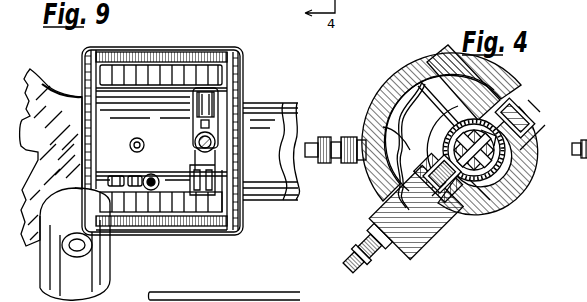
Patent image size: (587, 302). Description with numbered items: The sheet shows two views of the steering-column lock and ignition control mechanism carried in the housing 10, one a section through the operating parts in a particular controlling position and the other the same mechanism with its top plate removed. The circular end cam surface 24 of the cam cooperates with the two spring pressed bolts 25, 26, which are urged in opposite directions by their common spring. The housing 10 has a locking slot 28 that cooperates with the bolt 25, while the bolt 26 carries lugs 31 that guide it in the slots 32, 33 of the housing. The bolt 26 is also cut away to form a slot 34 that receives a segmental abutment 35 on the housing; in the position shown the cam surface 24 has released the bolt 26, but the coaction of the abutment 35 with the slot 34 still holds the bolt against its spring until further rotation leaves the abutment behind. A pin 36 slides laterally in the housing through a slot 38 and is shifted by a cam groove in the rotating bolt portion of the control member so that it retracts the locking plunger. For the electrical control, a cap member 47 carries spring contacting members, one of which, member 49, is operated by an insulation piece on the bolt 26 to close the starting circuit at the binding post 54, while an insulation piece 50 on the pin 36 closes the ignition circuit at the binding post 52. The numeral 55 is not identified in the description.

In FIG. 4, the housing member 10 is at (512, 203).
In FIG. 4, the circular end cam surface 24 is at (486, 132).
In FIG. 4, the spring pressed bolt 25 is at (533, 128).
In FIG. 4, the spring pressed bolt 26 is at (483, 212).
In FIG. 4, the locking slot 28 is at (522, 104).
In FIG. 9, the lugs 31 is at (213, 132).
In FIG. 4, the lugs 31 is at (425, 172).
In FIG. 9, the slot 32 is at (216, 105).
In FIG. 9, the slot 33 is at (228, 238).
In FIG. 9, the slot 34 is at (170, 212).
In FIG. 4, the slot 34 is at (445, 232).
In FIG. 9, the segmental abutment 35 is at (208, 220).
In FIG. 4, the segmental abutment 35 is at (428, 132).
In FIG. 9, the pin 36 is at (150, 204).
In FIG. 9, the slot 38 is at (120, 196).
In FIG. 4, the cap member 47 is at (374, 221).
In FIG. 4, the spring contacting member 49 is at (384, 90).
In FIG. 9, the insulation piece 50 is at (150, 192).
In FIG. 9, the binding post 52 is at (215, 9).
In FIG. 4, the binding post 54 is at (360, 140).
In FIG. 9, the slot 55 is at (263, 6).